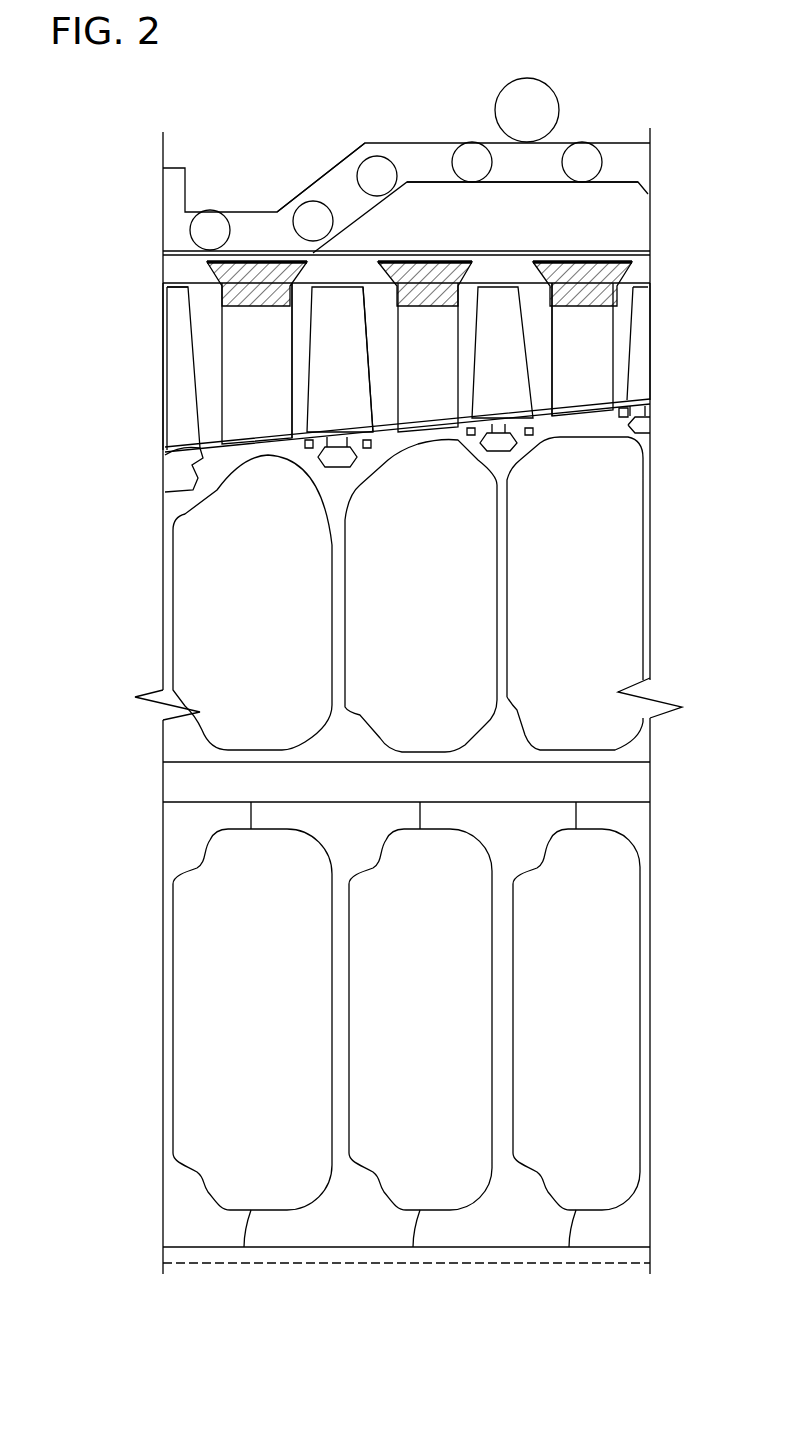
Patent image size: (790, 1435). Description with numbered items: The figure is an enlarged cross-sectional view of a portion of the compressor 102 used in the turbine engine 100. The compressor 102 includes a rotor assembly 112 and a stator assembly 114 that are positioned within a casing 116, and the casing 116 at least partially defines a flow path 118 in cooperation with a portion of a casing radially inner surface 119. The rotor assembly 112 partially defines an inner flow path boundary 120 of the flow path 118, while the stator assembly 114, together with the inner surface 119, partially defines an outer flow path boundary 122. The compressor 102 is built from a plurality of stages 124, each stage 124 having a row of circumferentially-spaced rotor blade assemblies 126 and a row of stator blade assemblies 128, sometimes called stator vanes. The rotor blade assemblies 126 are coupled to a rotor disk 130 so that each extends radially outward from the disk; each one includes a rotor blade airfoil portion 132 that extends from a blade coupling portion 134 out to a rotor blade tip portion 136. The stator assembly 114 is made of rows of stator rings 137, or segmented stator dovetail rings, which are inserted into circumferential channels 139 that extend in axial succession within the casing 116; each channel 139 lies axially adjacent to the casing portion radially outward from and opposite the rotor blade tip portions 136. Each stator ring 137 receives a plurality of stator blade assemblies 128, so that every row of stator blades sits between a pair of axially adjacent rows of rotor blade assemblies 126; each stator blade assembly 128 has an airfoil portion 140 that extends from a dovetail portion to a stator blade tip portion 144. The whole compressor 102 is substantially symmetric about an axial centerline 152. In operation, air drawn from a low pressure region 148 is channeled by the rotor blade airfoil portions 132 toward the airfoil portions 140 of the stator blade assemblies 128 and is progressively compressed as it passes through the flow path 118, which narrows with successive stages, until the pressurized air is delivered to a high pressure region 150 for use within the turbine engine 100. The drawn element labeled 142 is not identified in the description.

The turbine engine 100 is at (114, 98).
The compressor 102 is at (252, 112).
The rotor assembly 112 is at (171, 1085).
The stator assembly 114 is at (378, 139).
The casing 116 is at (643, 270).
The flow path 118 is at (143, 298).
The casing radially inner surface 119 is at (177, 283).
The inner flow path boundary 120 is at (648, 430).
The outer flow path boundary 122 is at (470, 279).
The stage 124 is at (546, 201).
The rotor blade assembly 126 is at (368, 311).
The stator blade assembly 128 is at (294, 403).
The rotor disk 130 is at (333, 613).
The rotor blade airfoil portion 132 is at (360, 359).
The blade coupling portion 134 is at (175, 462).
The rotor blade tip portion 136 is at (167, 398).
The stator ring 137 is at (265, 268).
The channel 139 is at (584, 262).
The airfoil portion 140 is at (277, 381).
The dovetail 142 is at (423, 262).
The stator blade tip portion 144 is at (262, 455).
The low pressure region 148 is at (141, 358).
The high pressure region 150 is at (655, 306).
The axial centerline 152 is at (580, 1262).